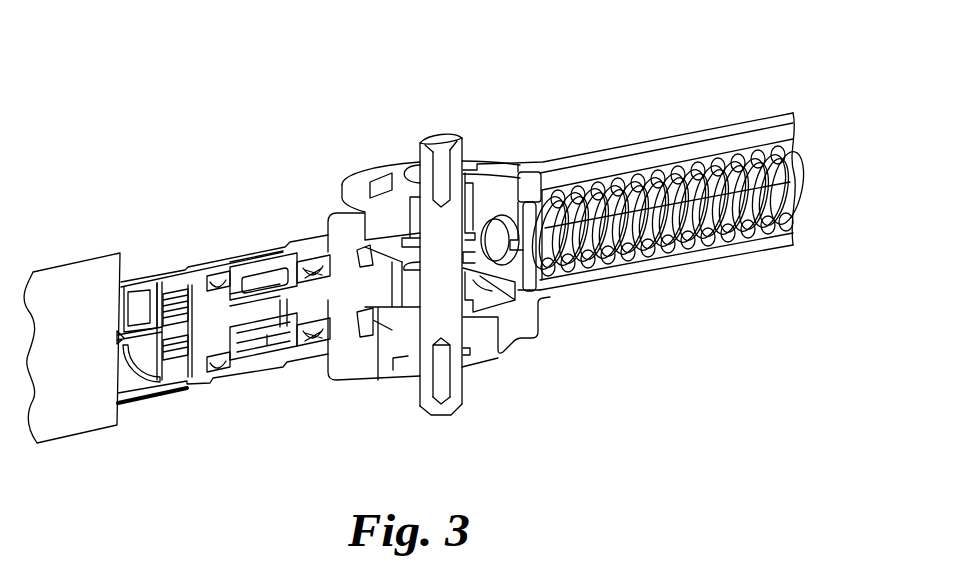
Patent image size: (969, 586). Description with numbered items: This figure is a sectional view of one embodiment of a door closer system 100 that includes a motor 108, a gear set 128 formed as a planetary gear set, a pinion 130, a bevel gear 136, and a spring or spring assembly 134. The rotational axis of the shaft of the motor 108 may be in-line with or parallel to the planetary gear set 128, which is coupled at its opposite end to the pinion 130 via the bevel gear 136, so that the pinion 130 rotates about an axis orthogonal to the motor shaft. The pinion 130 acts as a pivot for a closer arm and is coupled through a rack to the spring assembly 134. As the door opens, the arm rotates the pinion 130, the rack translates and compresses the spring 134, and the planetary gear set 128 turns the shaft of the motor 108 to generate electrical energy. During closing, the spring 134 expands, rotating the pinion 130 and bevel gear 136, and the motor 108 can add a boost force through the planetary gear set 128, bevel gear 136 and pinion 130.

The door closer system 100 is at (416, 278).
The motor 108 is at (82, 438).
The gear set 128 is at (300, 380).
The pinion 130 is at (455, 140).
The spring assembly 134 is at (709, 258).
The bevel gear 136 is at (373, 323).